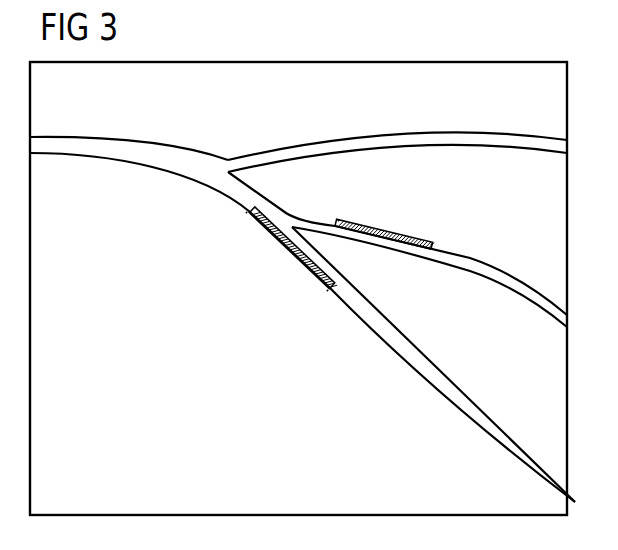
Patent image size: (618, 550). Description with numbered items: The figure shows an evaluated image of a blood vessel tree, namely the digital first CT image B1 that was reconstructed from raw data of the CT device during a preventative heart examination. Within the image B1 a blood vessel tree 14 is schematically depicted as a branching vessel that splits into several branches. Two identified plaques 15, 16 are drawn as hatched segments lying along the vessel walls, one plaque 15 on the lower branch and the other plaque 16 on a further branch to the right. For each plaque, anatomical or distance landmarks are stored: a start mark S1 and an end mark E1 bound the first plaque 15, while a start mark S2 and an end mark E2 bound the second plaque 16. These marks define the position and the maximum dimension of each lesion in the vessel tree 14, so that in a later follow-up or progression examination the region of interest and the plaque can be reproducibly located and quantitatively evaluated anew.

The first CT image B1 is at (375, 62).
The blood vessel tree 14 is at (187, 156).
The plaque 15 is at (285, 249).
The plaque 16 is at (382, 232).
The start mark S1 is at (246, 212).
The end mark E1 is at (327, 290).
The start mark S2 is at (338, 220).
The end mark E2 is at (431, 244).